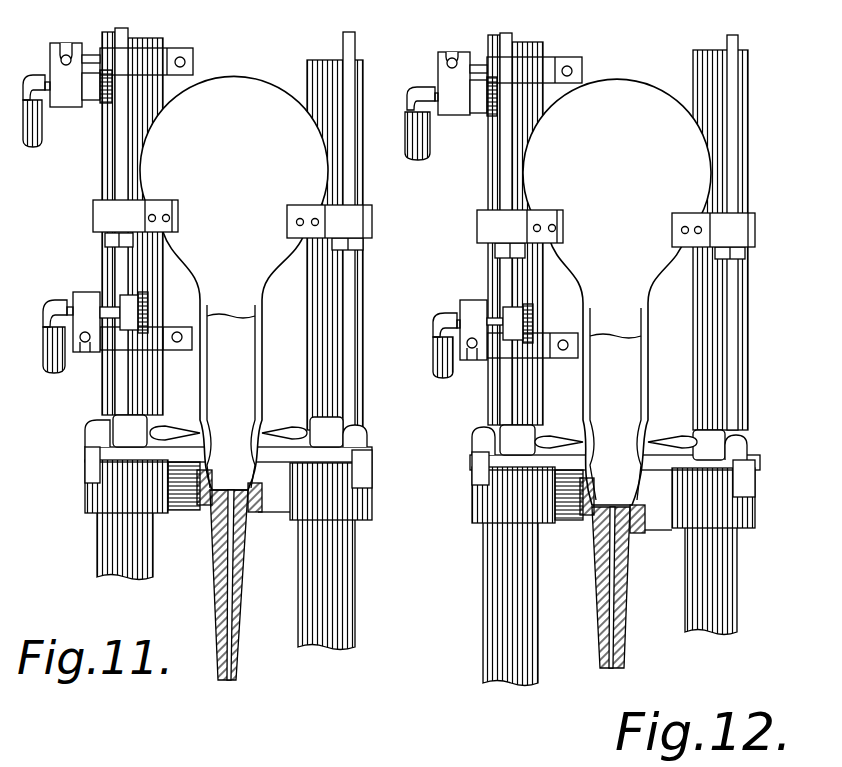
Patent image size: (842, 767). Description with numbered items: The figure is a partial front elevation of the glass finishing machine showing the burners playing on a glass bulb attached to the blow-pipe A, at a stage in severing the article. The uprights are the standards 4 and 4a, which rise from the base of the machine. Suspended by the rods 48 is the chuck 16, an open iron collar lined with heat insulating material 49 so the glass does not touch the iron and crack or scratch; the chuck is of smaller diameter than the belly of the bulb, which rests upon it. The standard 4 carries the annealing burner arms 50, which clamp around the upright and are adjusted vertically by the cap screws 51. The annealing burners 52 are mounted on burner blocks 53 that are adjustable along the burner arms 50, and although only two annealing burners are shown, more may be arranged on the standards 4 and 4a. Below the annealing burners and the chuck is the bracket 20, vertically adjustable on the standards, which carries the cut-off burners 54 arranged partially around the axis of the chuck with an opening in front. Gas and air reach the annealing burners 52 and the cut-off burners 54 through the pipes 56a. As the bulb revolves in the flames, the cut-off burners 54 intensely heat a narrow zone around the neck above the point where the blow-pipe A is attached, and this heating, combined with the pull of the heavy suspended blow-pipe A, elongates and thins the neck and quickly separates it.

In FIG. 11, the standard 4 is at (112, 268).
In FIG. 12, the standard 4 is at (512, 403).
In FIG. 11, the standard 4a is at (357, 290).
In FIG. 12, the standard 4a is at (737, 363).
In FIG. 11, the chuck 16 is at (367, 203).
In FIG. 12, the chuck 16 is at (743, 227).
In FIG. 11, the bracket 20 is at (343, 507).
In FIG. 12, the bracket 20 is at (725, 515).
In FIG. 11, the rods 48 is at (130, 32).
In FIG. 12, the rods 48 is at (513, 33).
In FIG. 11, the heat insulating material 49 is at (180, 213).
In FIG. 12, the heat insulating material 49 is at (563, 230).
In FIG. 11, the annealing burner arms 50 is at (67, 55).
In FIG. 12, the annealing burner arms 50 is at (456, 58).
In FIG. 11, the cap screws 51 is at (193, 62).
In FIG. 12, the cap screws 51 is at (582, 71).
In FIG. 11, the annealing burners 52 is at (97, 93).
In FIG. 12, the annealing burners 52 is at (480, 104).
In FIG. 11, the burner blocks 53 is at (58, 108).
In FIG. 12, the burner blocks 53 is at (450, 80).
In FIG. 11, the cut-off burners 54 is at (277, 433).
In FIG. 12, the cut-off burners 54 is at (658, 440).
In FIG. 11, the pipes 56a is at (27, 148).
In FIG. 12, the pipes 56a is at (416, 128).
In FIG. 11, the blow-pipe A is at (237, 667).
In FIG. 12, the blow-pipe A is at (625, 626).